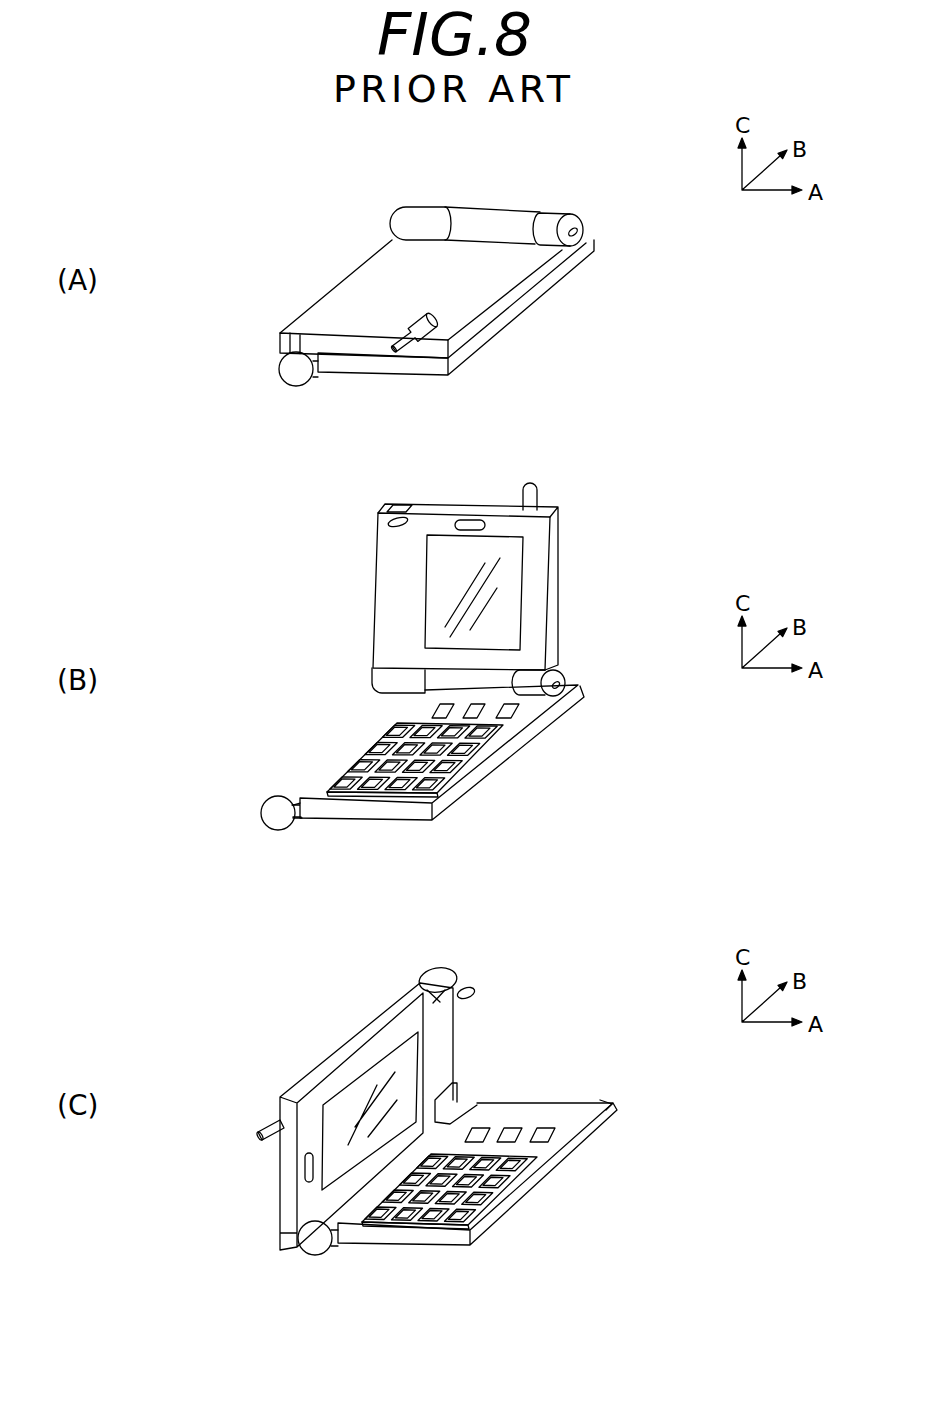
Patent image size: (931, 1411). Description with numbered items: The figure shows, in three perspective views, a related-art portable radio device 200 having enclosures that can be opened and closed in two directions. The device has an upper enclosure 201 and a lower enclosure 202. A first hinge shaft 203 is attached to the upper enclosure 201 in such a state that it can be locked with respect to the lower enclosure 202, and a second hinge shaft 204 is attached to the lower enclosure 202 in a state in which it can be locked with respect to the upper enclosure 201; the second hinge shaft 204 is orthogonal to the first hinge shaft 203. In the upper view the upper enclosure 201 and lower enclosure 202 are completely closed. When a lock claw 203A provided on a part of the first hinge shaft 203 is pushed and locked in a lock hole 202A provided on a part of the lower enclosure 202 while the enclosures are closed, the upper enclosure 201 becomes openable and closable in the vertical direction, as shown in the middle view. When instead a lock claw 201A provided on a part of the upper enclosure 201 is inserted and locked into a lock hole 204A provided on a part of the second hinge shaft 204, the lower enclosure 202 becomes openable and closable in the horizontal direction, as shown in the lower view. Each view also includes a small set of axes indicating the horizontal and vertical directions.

The portable radio device 200 is at (328, 207).
The upper enclosure 201 is at (492, 208).
The lock claw 201A is at (385, 523).
The lower enclosure 202 is at (527, 304).
The lock hole 202A is at (588, 1104).
The first hinge shaft 203 is at (585, 228).
The lock claw 203A is at (473, 993).
The second hinge shaft 204 is at (300, 368).
The lock hole 204A is at (300, 783).